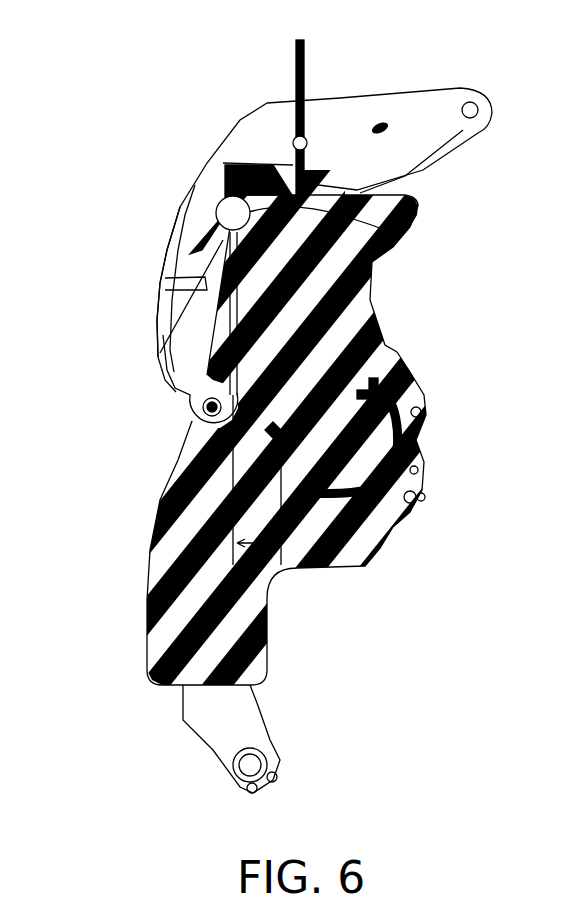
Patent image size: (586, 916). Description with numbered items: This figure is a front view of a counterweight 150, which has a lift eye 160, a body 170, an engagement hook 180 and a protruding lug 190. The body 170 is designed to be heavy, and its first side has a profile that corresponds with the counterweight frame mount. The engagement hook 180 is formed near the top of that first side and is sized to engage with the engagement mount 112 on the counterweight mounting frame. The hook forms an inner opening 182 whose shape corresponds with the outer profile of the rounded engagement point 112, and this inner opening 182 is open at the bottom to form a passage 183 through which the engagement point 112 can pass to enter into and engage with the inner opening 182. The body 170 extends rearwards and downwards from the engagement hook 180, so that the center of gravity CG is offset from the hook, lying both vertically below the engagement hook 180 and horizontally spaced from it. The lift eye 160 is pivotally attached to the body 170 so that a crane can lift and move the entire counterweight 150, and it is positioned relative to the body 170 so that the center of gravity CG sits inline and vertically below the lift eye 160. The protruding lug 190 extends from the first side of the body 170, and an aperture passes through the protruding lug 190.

The engagement mount 112 is at (367, 262).
The counterweight 150 is at (372, 450).
The lift eye 160 is at (305, 75).
The body 170 is at (177, 547).
The engagement hook 180 is at (203, 187).
The inner opening 182 is at (190, 250).
The passage 183 is at (157, 327).
The protruding lug 190 is at (200, 430).
The center of gravity CG is at (276, 425).